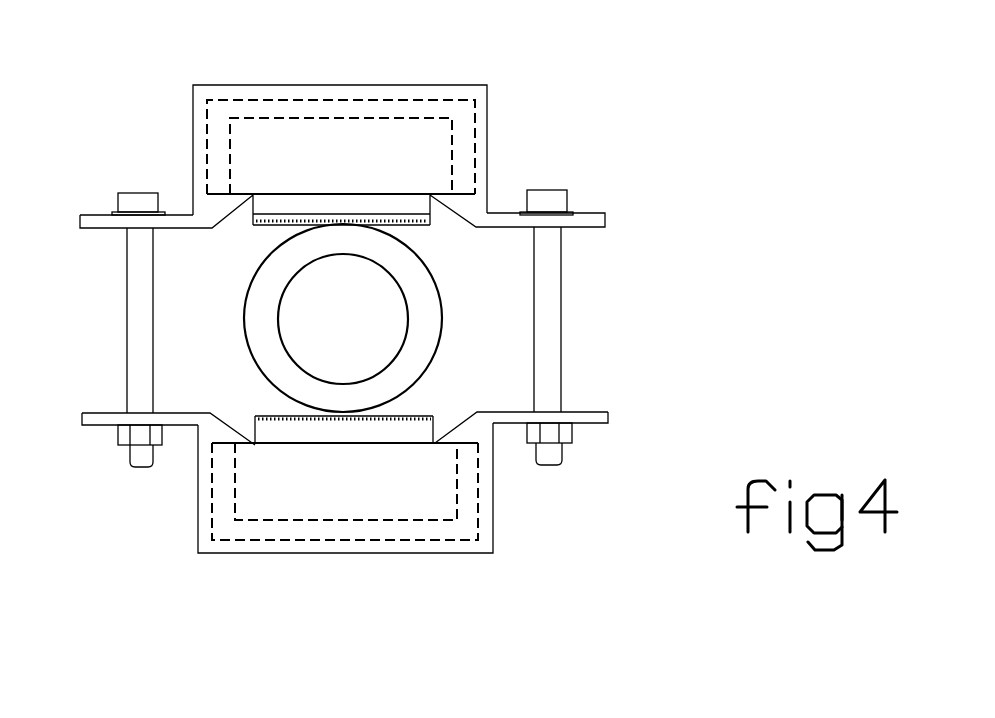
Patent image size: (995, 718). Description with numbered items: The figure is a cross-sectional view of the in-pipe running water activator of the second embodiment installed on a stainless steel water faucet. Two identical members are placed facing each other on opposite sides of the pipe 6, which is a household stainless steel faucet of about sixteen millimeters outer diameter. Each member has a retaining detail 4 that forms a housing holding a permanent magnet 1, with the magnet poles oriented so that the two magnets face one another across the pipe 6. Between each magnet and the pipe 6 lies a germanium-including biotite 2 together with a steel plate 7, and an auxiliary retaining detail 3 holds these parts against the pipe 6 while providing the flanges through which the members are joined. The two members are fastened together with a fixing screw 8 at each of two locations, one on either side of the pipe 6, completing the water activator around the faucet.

The permanent magnet 1 is at (417, 153).
The germanium-including biotite 2 is at (428, 225).
The auxiliary retaining detail 3 is at (226, 208).
The retaining detail 4 is at (195, 92).
The pipe 6 is at (257, 280).
The steel plate 7 is at (302, 203).
The fixing screw for unit installation 8 is at (143, 332).